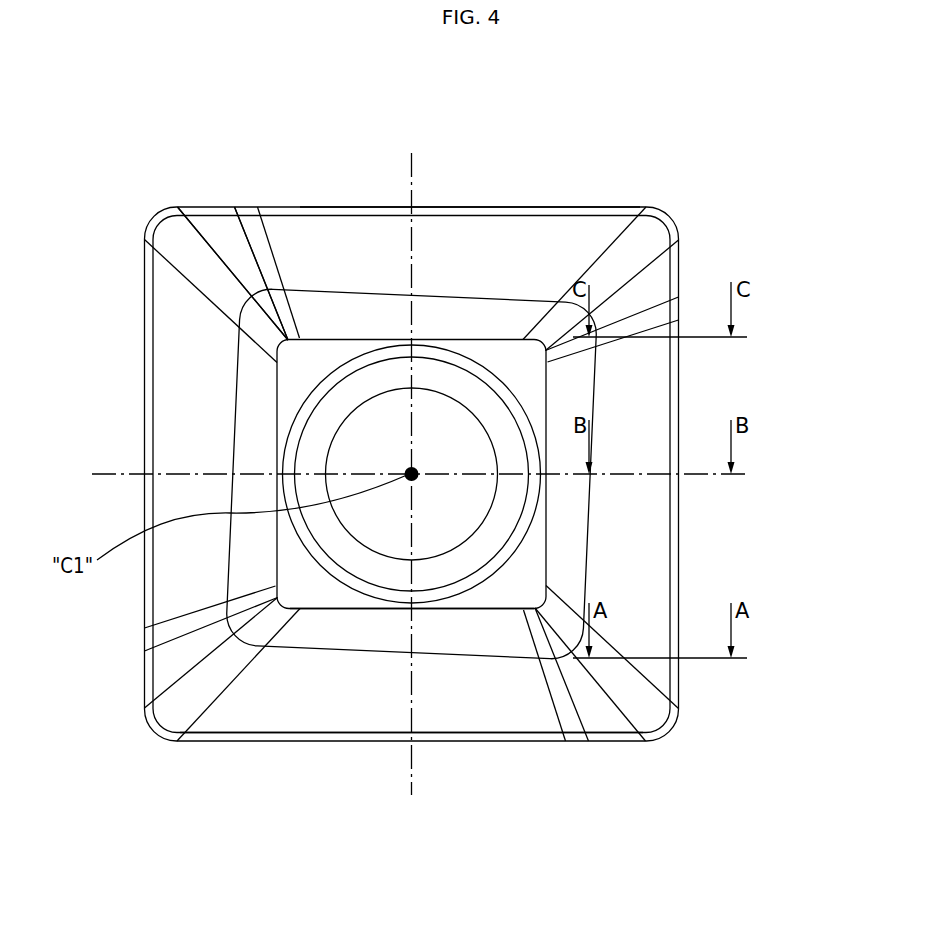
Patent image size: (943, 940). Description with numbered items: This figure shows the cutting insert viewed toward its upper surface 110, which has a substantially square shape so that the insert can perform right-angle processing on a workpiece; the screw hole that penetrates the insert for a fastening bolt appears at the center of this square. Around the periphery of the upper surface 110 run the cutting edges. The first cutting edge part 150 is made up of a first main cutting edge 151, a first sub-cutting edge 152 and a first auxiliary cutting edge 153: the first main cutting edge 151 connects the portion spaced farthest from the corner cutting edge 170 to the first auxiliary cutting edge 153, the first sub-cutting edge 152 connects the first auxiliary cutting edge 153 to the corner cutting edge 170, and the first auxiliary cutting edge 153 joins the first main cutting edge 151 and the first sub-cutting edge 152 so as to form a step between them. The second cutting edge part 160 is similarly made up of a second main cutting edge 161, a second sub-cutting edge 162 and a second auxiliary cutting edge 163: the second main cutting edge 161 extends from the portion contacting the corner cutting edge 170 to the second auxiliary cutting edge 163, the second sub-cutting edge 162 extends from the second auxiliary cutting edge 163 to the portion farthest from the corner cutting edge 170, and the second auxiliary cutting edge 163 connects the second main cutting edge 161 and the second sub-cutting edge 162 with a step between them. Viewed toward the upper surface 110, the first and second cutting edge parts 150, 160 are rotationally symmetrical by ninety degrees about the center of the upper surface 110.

The upper surface 110 is at (320, 716).
The first cutting edge part 150 is at (694, 520).
The first main cutting edge 151 is at (680, 583).
The first sub-cutting edge 152 is at (678, 267).
The first auxiliary cutting edge 153 is at (678, 307).
The second cutting edge part 160 is at (455, 195).
The second main cutting edge 161 is at (505, 207).
The second sub-cutting edge 162 is at (207, 207).
The second auxiliary cutting edge 163 is at (247, 207).
The corner cutting edge 170 is at (670, 213).